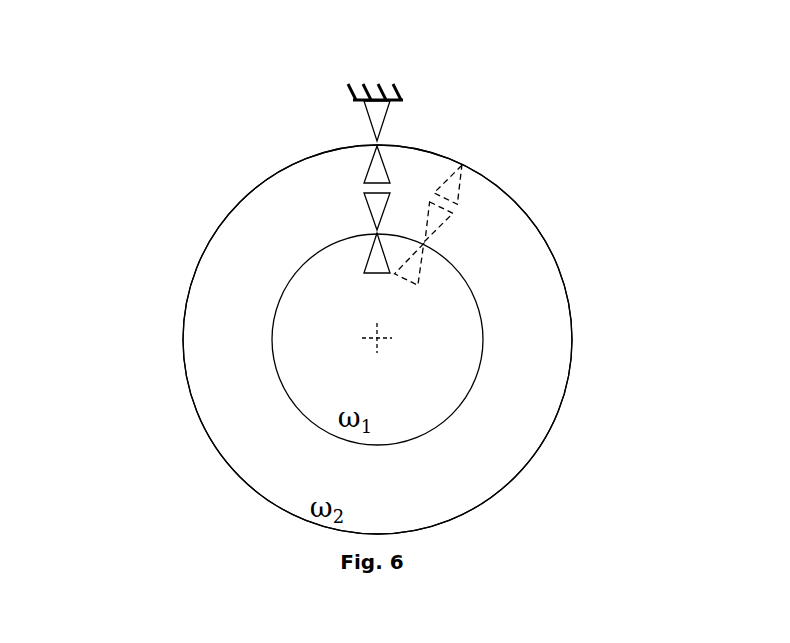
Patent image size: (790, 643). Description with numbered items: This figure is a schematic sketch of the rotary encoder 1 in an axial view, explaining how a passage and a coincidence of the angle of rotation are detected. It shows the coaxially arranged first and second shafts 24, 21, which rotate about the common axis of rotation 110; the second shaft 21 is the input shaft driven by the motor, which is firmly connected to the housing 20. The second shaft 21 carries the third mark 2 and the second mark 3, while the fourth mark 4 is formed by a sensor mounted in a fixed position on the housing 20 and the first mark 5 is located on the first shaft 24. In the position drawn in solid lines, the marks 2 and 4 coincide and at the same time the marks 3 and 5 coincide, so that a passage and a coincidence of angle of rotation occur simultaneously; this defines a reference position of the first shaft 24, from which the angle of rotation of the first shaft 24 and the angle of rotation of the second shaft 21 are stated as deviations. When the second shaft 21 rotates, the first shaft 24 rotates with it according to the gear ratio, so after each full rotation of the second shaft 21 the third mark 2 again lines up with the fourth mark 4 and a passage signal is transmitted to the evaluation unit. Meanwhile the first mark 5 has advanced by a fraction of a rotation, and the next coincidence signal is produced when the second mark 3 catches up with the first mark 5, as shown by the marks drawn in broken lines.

The rotary encoder 1 is at (548, 172).
The third mark 2 is at (373, 173).
The second mark 3 is at (377, 208).
The fourth mark 4 is at (378, 118).
The first mark 5 is at (378, 258).
The housing 20 is at (379, 98).
The second shaft 21 is at (230, 388).
The first shaft 24 is at (310, 325).
The axis of rotation 110 is at (372, 342).